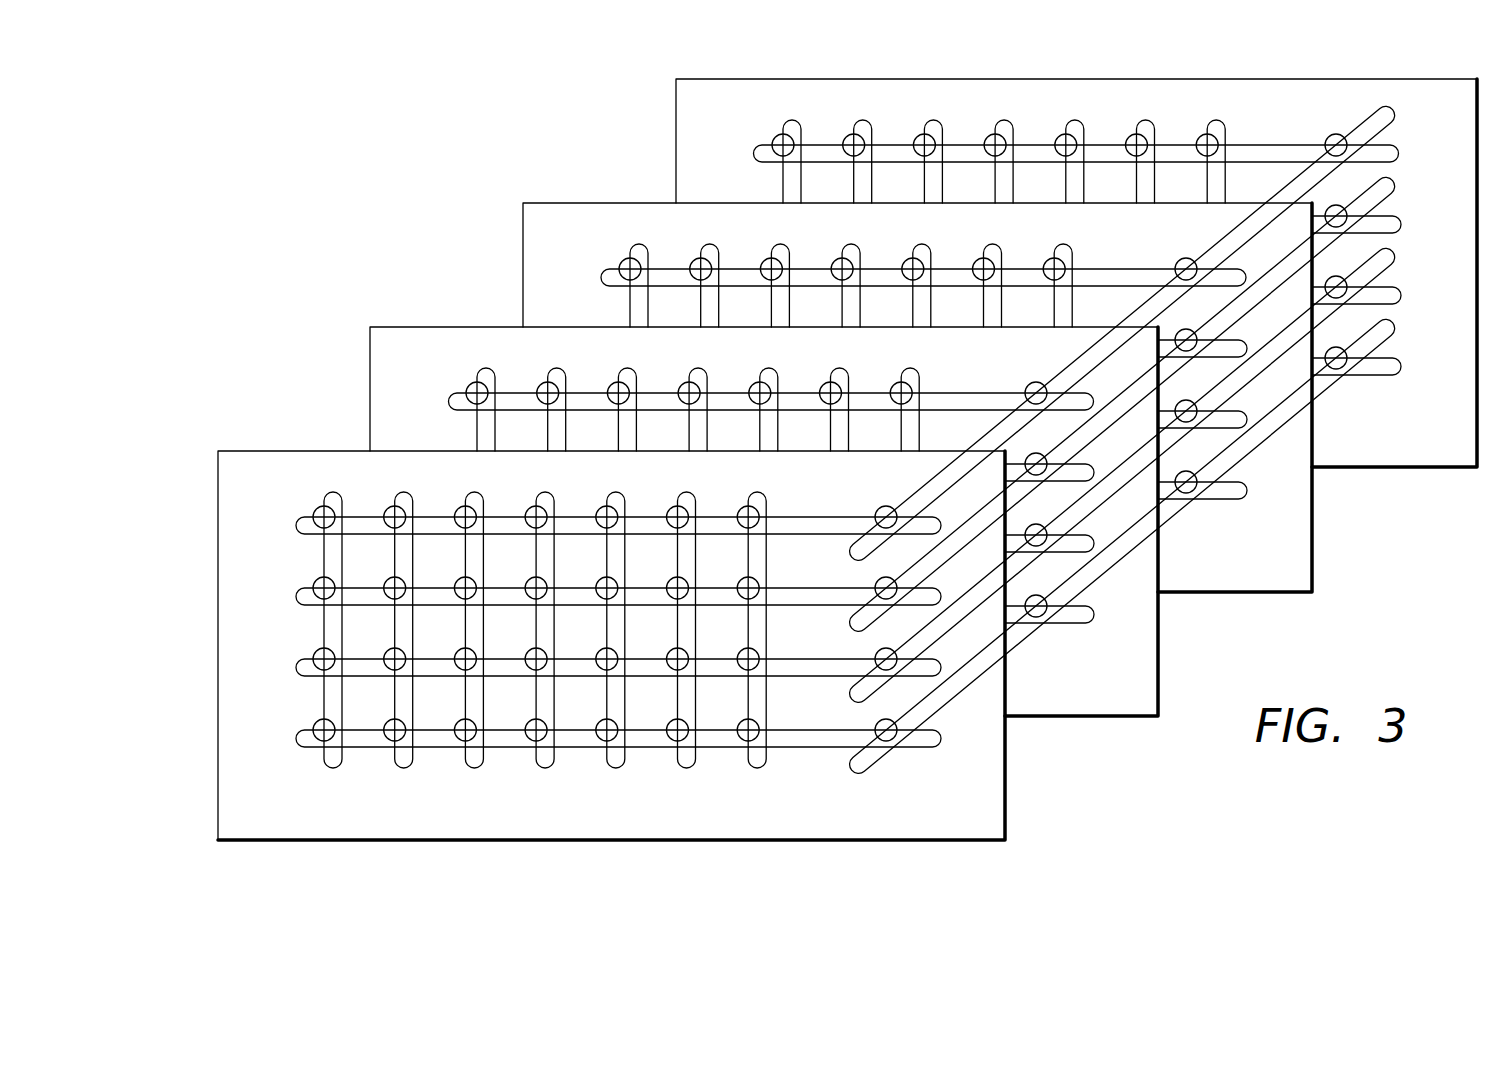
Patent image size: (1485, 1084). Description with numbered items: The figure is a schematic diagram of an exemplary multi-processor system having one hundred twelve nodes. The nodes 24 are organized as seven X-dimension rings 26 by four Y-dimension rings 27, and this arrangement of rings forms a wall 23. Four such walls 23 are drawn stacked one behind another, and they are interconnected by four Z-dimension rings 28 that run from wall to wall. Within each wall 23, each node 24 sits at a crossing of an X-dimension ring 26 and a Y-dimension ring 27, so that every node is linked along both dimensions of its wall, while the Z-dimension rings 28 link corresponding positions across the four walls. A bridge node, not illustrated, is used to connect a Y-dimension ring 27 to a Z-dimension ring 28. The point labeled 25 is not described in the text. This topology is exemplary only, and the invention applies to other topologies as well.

The wall 23 is at (816, 459).
The node 24 is at (765, 415).
The interconnect contact 25 is at (1111, 414).
The X-dimension ring 26 is at (774, 473).
The Y-dimension ring 27 is at (817, 455).
The Z-dimension ring 28 is at (1150, 440).